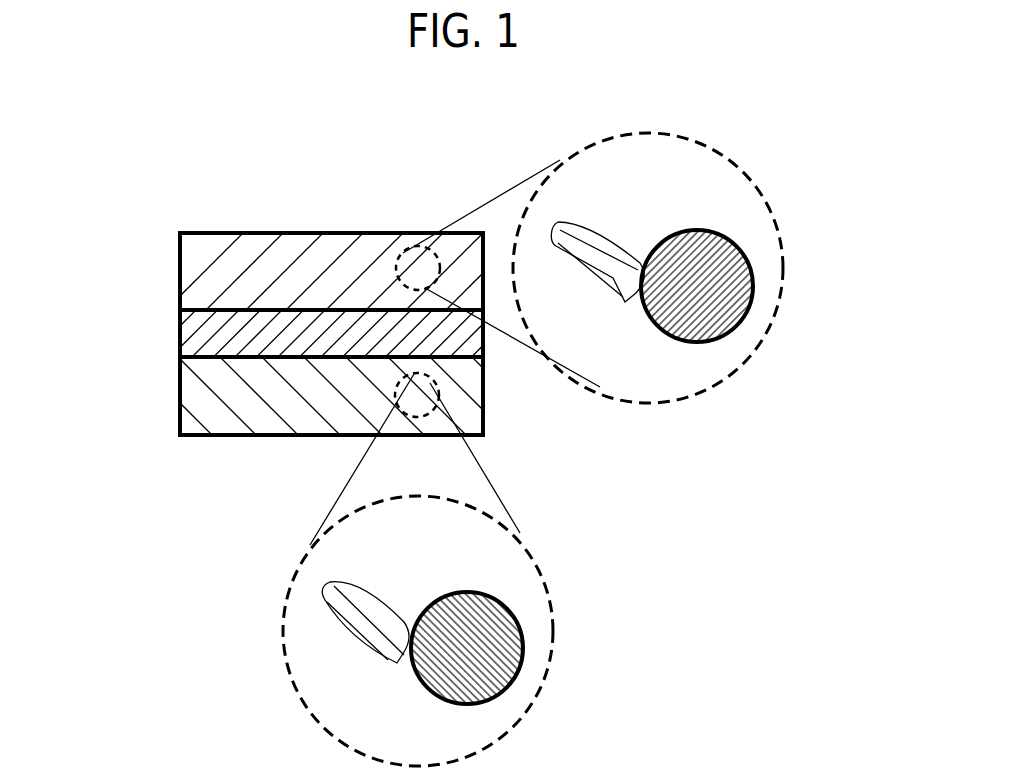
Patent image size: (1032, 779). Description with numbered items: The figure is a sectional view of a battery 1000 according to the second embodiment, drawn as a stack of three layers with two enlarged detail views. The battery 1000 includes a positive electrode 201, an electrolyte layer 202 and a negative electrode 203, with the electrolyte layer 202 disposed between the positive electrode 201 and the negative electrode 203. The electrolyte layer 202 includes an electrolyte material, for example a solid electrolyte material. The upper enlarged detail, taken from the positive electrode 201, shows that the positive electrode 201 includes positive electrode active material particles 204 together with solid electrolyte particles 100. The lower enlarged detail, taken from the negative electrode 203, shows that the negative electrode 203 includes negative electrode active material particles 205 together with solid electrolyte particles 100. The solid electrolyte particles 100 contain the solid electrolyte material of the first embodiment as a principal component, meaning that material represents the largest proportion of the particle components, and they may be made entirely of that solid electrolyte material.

The battery 1000 is at (373, 178).
The positive electrode 201 is at (213, 255).
The electrolyte layer 202 is at (213, 332).
The negative electrode 203 is at (218, 395).
The positive electrode active material particles 204 is at (716, 284).
The negative electrode active material particles 205 is at (495, 647).
The solid electrolyte particles 100 is at (621, 302).